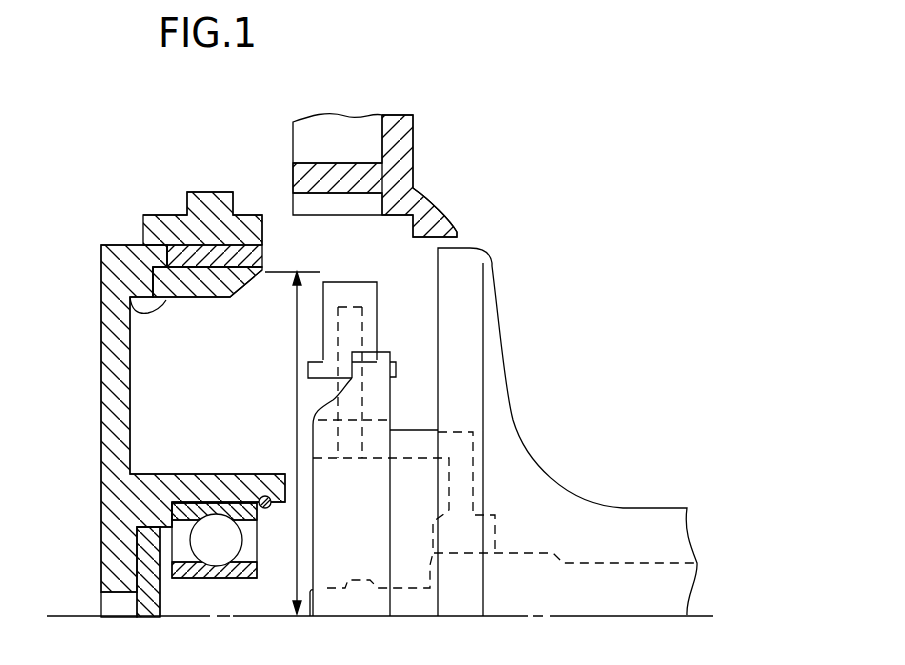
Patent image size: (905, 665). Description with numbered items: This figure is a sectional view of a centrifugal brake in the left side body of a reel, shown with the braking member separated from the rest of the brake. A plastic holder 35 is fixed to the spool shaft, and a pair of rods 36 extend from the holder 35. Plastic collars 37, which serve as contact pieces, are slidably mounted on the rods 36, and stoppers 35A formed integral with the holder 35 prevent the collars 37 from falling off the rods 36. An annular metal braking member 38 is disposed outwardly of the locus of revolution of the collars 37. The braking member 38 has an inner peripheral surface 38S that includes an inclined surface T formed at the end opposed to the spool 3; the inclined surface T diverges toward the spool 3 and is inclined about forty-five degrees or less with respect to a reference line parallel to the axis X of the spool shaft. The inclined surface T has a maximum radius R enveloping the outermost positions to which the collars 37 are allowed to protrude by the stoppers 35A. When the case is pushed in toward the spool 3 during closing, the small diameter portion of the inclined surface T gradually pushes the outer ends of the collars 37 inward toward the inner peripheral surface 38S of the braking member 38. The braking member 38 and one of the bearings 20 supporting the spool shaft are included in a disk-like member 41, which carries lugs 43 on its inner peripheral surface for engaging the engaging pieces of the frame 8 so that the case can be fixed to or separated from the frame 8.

The spool 3 is at (627, 508).
The frame 8 is at (402, 152).
The bearing 20 is at (213, 538).
The holder 35 is at (377, 403).
The stopper 35A is at (383, 358).
The rod 36 is at (345, 388).
The collar 37 is at (345, 288).
The braking member 38 is at (197, 290).
The inner peripheral surface 38S is at (130, 312).
The disk-like member 41 is at (105, 385).
The lug 43 is at (200, 198).
The inclined surface T is at (244, 291).
The maximum radius R is at (297, 442).
The axis X is at (67, 613).